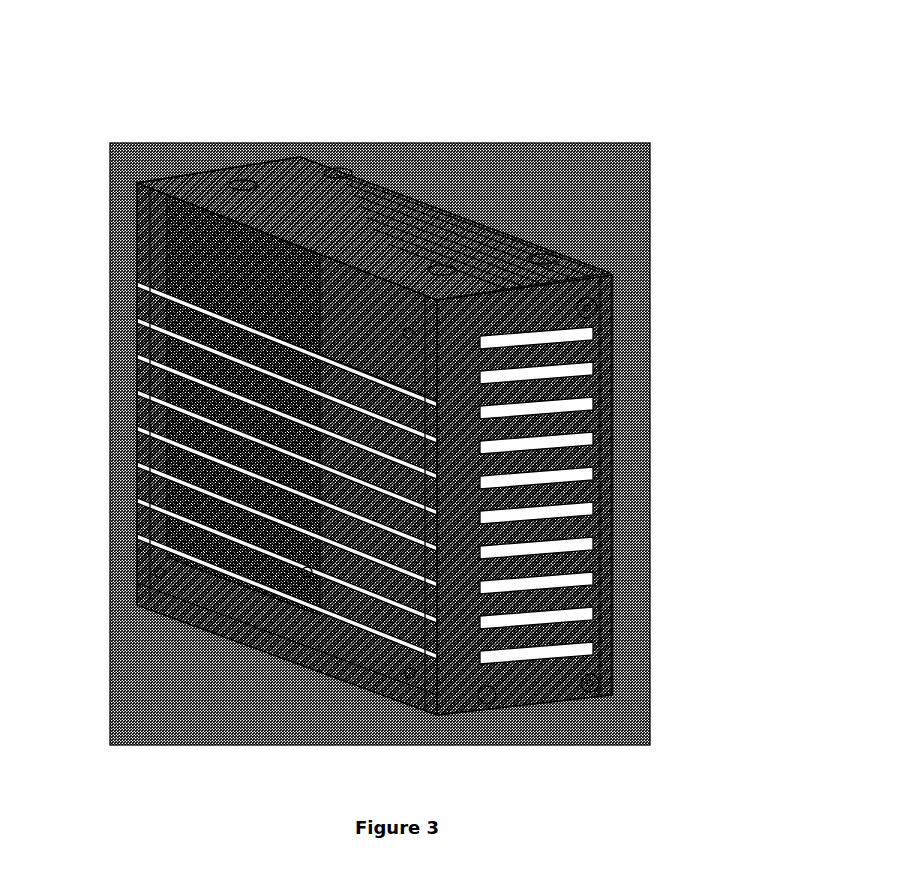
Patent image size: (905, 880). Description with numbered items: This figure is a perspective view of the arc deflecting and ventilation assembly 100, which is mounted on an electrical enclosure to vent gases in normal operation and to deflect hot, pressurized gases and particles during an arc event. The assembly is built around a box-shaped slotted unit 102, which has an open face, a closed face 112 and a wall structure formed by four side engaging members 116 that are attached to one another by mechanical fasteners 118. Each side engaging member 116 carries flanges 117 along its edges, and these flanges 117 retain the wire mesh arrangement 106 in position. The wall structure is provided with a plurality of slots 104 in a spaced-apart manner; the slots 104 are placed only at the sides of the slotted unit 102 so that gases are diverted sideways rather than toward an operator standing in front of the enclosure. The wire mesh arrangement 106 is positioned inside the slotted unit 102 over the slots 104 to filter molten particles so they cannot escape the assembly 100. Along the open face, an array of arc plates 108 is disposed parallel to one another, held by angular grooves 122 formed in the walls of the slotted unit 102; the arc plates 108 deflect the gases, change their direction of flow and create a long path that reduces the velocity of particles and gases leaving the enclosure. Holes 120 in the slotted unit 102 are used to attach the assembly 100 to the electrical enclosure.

The arc deflecting and ventilation assembly 100 is at (674, 59).
The slotted unit 102 is at (155, 192).
The slots 104 is at (387, 218).
The wire mesh arrangement 106 is at (174, 390).
The arc plates 108 is at (139, 284).
The closed face 112 is at (372, 352).
The side engaging members 116 is at (604, 535).
The flanges 117 is at (202, 238).
The mechanical fasteners 118 is at (593, 682).
The holes 120 is at (158, 575).
The angular grooves 122 is at (452, 402).